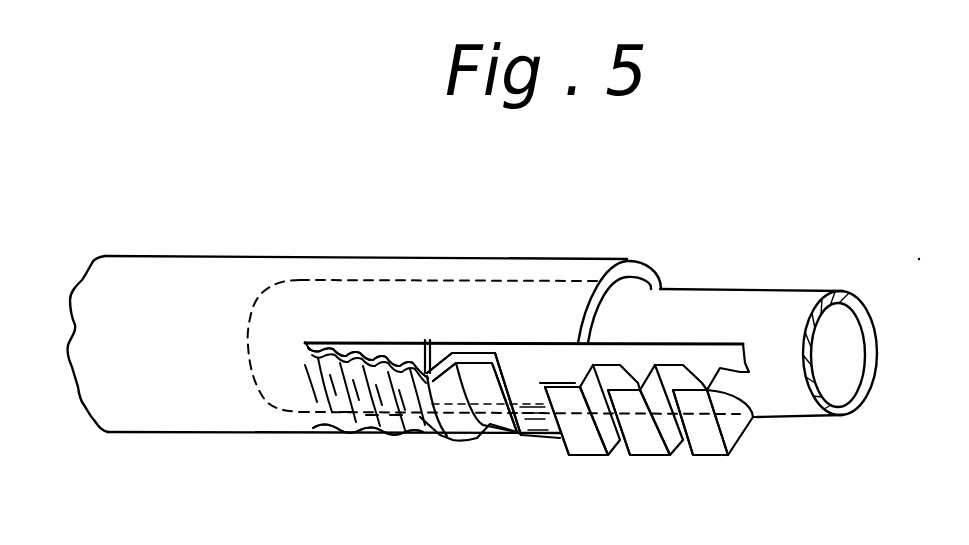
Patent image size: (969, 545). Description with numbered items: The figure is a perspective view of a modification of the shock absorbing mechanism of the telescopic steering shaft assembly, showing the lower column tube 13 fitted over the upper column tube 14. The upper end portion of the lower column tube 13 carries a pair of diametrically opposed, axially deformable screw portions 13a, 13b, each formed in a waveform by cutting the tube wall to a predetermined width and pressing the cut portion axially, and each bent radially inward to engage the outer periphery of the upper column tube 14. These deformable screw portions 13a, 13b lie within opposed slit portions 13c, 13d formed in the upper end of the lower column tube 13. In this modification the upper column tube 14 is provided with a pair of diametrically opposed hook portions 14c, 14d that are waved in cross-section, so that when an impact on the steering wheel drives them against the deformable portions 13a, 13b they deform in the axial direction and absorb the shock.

The lower column tube 13 is at (192, 280).
The deformable screw portion 13a is at (422, 418).
The deformable screw portion 13b is at (368, 391).
The slit portion 13c is at (527, 355).
The slit portion 13d is at (474, 394).
The upper column tube 14 is at (777, 312).
The hook portion 14c is at (647, 443).
The hook portion 14d is at (636, 421).